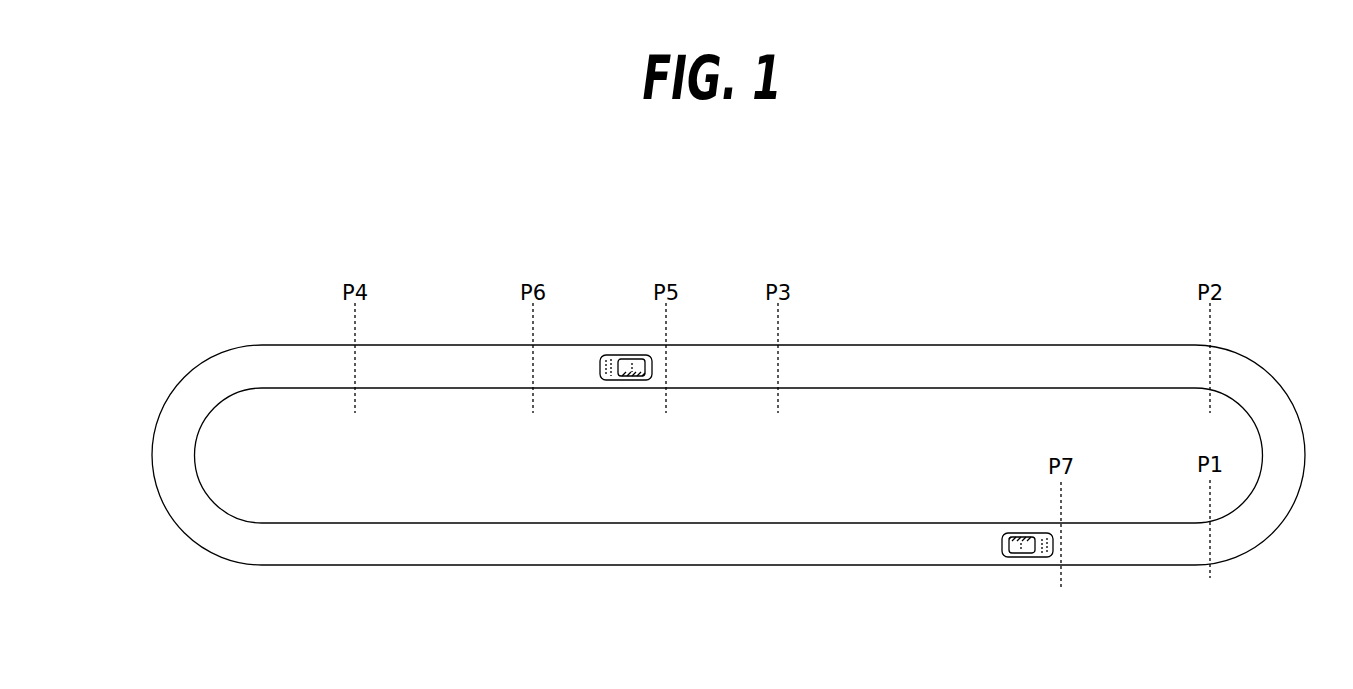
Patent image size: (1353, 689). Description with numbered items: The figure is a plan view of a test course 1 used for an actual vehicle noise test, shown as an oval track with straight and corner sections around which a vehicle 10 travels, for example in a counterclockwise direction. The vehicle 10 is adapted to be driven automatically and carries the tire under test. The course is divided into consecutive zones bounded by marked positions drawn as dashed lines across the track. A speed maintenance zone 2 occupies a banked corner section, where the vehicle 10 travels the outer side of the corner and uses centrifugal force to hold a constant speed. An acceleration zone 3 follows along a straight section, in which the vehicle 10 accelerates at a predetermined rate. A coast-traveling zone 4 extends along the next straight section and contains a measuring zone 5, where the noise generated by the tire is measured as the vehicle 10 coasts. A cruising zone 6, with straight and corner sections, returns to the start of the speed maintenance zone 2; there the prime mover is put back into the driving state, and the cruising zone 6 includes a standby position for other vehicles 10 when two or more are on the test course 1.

The test course 1 is at (1056, 233).
The speed maintenance zone 2 is at (1284, 376).
The acceleration zone 3 is at (954, 345).
The coast-traveling zone 4 is at (437, 345).
The measuring zone 5 is at (572, 390).
The cruising zone 6 is at (506, 566).
The vehicle 10 is at (636, 356).